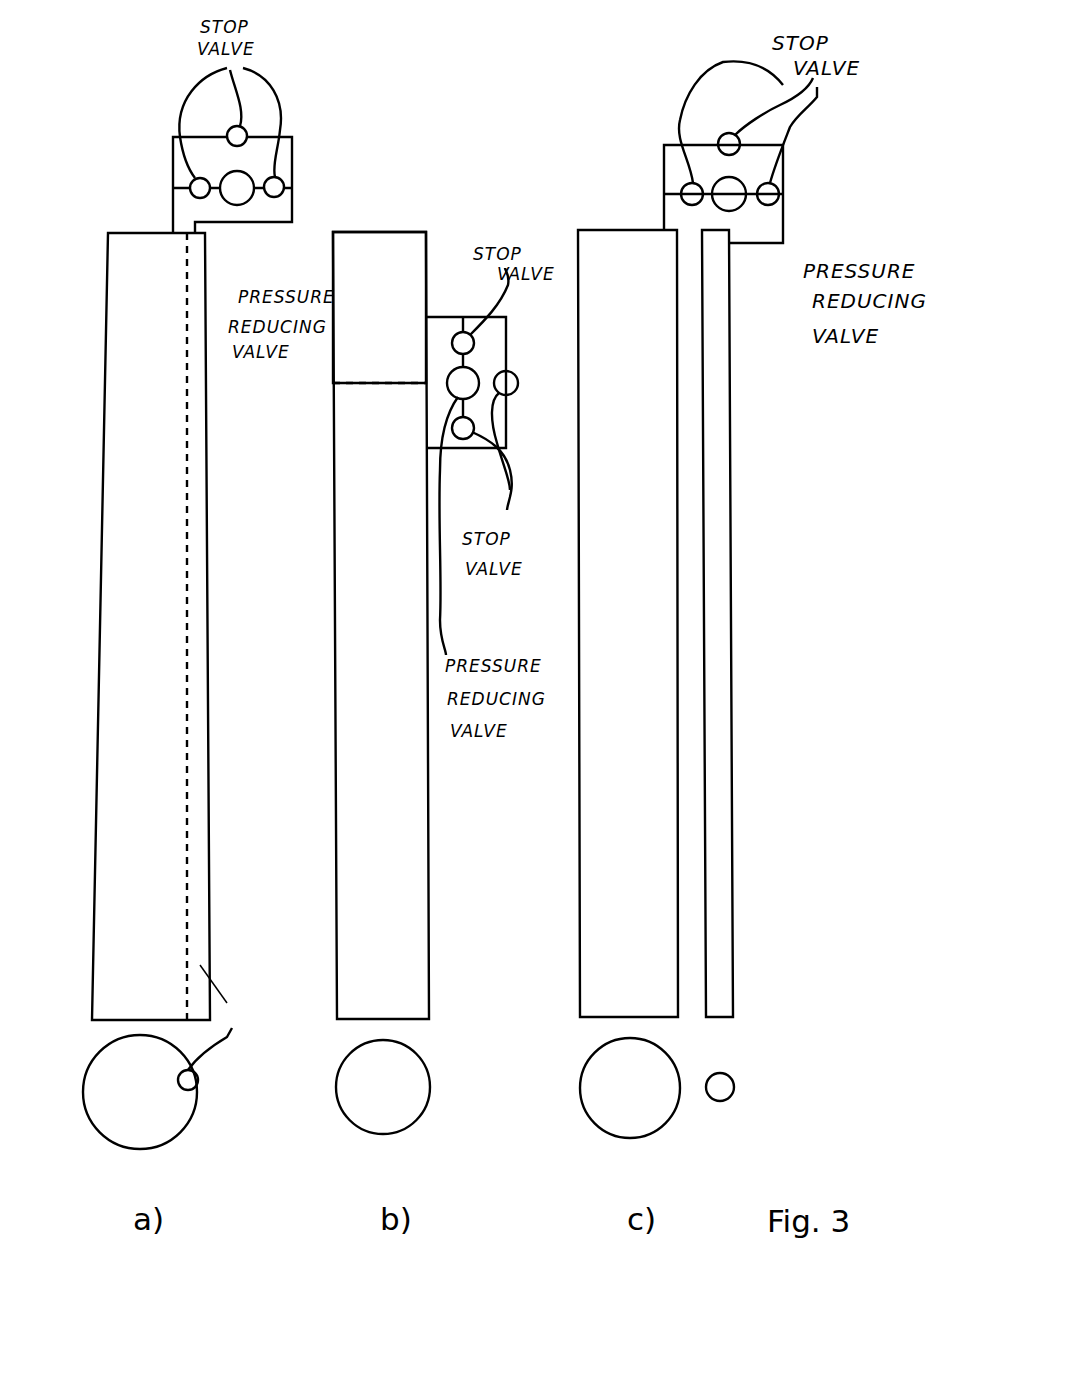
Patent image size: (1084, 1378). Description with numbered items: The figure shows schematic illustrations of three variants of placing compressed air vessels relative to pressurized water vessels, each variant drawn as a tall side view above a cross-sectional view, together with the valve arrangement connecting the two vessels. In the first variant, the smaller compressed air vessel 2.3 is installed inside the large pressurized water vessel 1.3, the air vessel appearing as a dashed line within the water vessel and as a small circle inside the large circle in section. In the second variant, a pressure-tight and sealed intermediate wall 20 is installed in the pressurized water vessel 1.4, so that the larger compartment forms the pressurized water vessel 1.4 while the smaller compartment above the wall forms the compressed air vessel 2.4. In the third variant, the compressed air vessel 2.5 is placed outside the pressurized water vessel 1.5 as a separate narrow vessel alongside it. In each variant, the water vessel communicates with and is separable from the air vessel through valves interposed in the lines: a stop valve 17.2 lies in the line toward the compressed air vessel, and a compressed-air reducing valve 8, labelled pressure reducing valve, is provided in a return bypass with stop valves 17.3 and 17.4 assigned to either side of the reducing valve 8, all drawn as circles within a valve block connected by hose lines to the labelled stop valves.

The pressurized water vessel 1.3 is at (125, 412).
The compressed air vessel 2.3 is at (197, 515).
The pressurized water vessel 1.4 is at (348, 443).
The compressed air vessel 2.4 is at (392, 242).
The intermediate wall 20 is at (373, 383).
The pressurized water vessel 1.5 is at (587, 585).
The compressed air vessel 2.5 is at (725, 562).
The compressed-air reducing valve 8 is at (237, 190).
The stop valve 17.2 is at (237, 133).
The stop valve 17.3 is at (200, 188).
The stop valve 17.4 is at (274, 187).